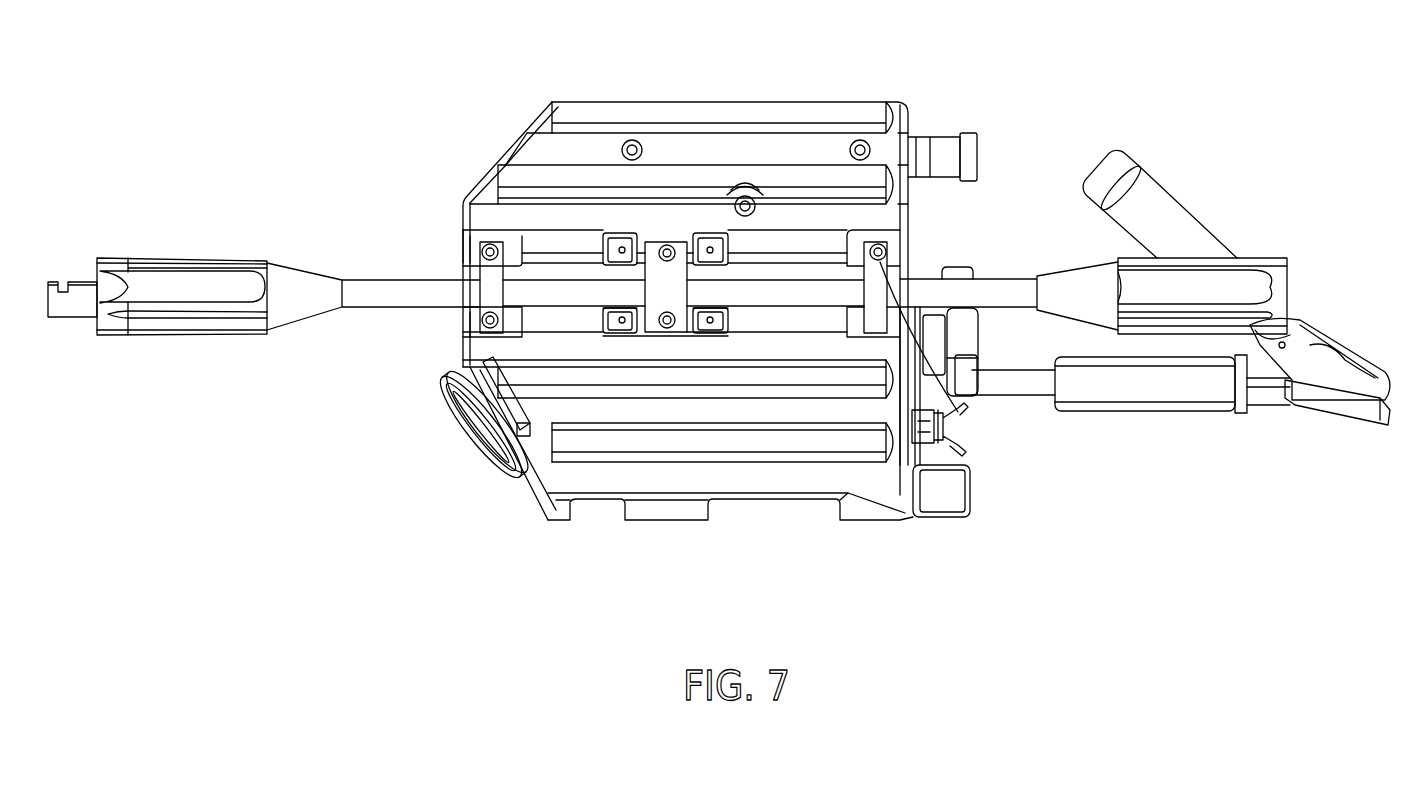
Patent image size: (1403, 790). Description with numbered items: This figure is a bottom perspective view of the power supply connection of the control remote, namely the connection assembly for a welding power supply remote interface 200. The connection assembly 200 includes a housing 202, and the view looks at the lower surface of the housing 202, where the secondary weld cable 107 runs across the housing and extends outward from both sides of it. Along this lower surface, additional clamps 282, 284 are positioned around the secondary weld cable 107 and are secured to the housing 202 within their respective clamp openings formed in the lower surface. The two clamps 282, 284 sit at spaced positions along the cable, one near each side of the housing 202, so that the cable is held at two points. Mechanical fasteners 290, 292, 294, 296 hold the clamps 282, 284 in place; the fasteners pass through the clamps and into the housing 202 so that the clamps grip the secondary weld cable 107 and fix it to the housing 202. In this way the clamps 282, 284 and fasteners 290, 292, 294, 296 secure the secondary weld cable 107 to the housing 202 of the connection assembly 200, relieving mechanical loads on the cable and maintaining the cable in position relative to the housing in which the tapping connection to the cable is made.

The connection assembly for a welding power supply remote interface 200 is at (877, 82).
The housing 202 is at (704, 103).
The additional clamp 282 is at (480, 301).
The additional clamp 284 is at (880, 290).
The mechanical fastener 290 is at (479, 251).
The mechanical fastener 292 is at (487, 324).
The mechanical fastener 294 is at (866, 252).
The mechanical fastener 296 is at (962, 410).
The secondary weld cable 107 is at (401, 312).